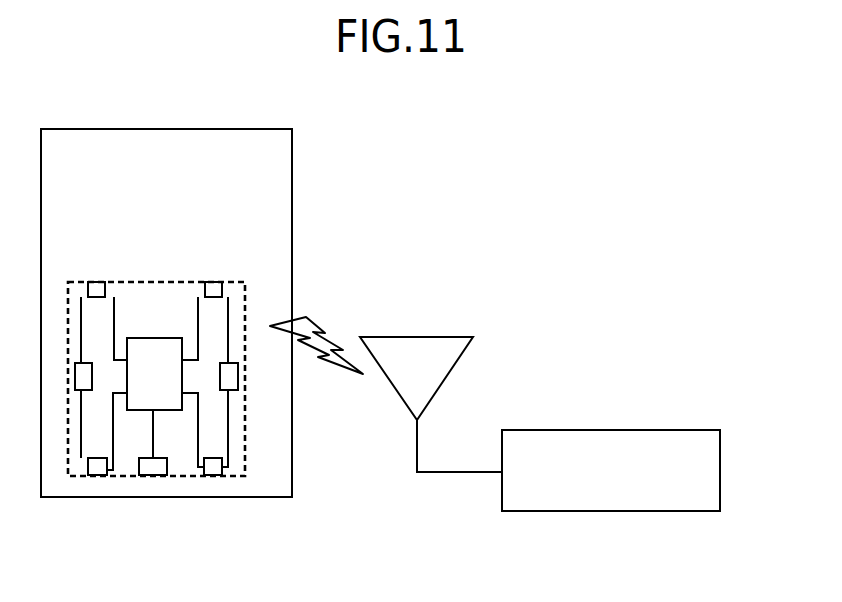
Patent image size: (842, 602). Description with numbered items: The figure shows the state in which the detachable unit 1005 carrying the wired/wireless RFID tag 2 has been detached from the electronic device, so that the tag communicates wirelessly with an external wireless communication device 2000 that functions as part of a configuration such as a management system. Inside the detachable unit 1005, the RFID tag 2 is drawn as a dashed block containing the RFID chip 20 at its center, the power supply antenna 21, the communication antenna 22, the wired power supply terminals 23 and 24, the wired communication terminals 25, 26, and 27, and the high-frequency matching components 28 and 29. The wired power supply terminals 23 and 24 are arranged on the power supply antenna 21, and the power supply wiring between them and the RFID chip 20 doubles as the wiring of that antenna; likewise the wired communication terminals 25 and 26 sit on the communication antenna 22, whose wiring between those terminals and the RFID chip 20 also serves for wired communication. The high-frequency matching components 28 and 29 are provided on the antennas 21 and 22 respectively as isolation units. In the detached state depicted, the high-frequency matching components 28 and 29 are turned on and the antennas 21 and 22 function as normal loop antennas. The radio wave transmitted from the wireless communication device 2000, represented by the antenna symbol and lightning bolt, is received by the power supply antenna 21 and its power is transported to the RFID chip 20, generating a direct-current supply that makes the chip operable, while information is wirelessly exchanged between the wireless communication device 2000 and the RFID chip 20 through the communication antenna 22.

The detachable unit 1005 is at (165, 129).
The RFID tag 2 is at (166, 282).
The RFID chip 20 is at (151, 338).
The power supply antenna 21 is at (231, 319).
The communication antenna 22 is at (114, 316).
The wired power supply terminal 23 is at (214, 282).
The wired power supply terminal 24 is at (221, 463).
The wired communication terminal 25 is at (95, 282).
The wired communication terminal 26 is at (105, 461).
The wired communication terminal 27 is at (159, 458).
The high-frequency matching component 28 is at (230, 381).
The high-frequency matching component 29 is at (92, 370).
The wireless communication device 2000 is at (560, 430).